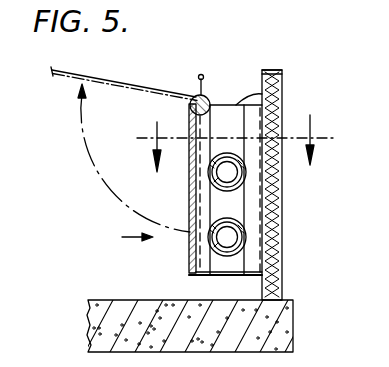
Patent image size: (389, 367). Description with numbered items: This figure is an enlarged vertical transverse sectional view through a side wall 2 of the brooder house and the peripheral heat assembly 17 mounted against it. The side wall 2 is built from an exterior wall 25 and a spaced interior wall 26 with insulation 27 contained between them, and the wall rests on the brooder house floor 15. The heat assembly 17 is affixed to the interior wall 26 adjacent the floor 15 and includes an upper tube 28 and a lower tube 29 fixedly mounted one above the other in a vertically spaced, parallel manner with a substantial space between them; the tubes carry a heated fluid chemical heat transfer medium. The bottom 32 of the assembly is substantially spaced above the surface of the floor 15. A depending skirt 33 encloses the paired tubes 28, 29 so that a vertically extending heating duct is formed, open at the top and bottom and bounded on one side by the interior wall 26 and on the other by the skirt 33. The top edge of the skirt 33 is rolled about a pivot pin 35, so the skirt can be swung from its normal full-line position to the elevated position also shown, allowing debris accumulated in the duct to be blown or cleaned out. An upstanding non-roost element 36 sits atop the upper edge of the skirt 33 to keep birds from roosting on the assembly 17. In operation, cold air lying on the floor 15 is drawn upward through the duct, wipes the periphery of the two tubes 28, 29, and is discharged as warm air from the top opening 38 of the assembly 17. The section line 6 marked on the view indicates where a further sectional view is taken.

The side wall 2 is at (288, 79).
The section line 6- 6 is at (235, 143).
The brooder house floor 15 is at (272, 322).
The peripheral heat assembly 17 is at (127, 238).
The exterior wall 25 is at (283, 220).
The interior wall 26 is at (262, 98).
The insulation 27 is at (270, 72).
The upper tube 28 is at (223, 172).
The lower tube 29 is at (223, 237).
The bottom of assembly 32 is at (233, 277).
The depending skirt 33 is at (172, 84).
The pivot pin 35 is at (209, 98).
The non-roost element 36 is at (197, 75).
The top opening 38 is at (283, 95).